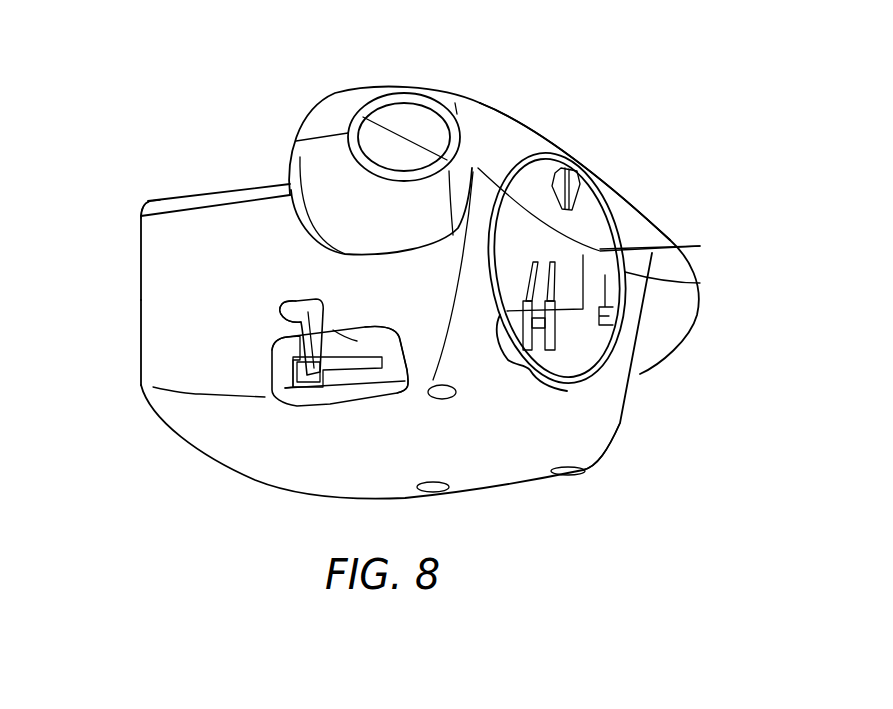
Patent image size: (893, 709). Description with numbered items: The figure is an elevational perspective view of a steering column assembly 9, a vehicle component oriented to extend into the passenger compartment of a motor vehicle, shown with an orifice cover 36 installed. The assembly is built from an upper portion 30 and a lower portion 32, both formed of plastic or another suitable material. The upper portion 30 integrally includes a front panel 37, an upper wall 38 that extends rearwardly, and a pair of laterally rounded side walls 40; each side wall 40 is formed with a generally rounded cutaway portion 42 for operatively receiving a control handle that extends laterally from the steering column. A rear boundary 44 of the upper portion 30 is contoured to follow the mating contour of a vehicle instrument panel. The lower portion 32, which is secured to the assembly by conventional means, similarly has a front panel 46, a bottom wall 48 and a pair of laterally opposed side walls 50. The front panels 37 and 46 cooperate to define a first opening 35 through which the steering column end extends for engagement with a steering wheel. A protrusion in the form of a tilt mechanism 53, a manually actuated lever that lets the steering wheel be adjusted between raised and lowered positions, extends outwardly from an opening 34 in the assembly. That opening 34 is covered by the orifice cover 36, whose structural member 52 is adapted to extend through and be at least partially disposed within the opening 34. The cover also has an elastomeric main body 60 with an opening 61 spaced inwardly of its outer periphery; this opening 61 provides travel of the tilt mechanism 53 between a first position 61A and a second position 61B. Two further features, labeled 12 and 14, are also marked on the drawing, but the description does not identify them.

The steering column assembly 9 is at (686, 121).
The housing bottom portion 12 is at (573, 353).
The side wall 14 is at (161, 297).
The upper portion 30 is at (457, 98).
The lower portion 32 is at (624, 422).
The opening 34 is at (295, 385).
The first opening 35 is at (700, 246).
The orifice cover 36 is at (287, 347).
The front panel 37 is at (630, 226).
The upper wall 38 is at (183, 200).
The laterally rounded side walls 40 is at (333, 111).
The rounded cutaway portion 42 is at (407, 111).
The rear boundary 44 is at (145, 206).
The front panel 46 is at (607, 396).
The bottom wall 48 is at (490, 470).
The laterally opposed side walls 50 is at (154, 247).
The structural member 52 is at (330, 318).
The tilt mechanism 53 is at (289, 304).
The elastomeric main body 60 is at (275, 368).
The opening 61 is at (298, 378).
The first position 61A is at (290, 345).
The second position 61B is at (407, 338).